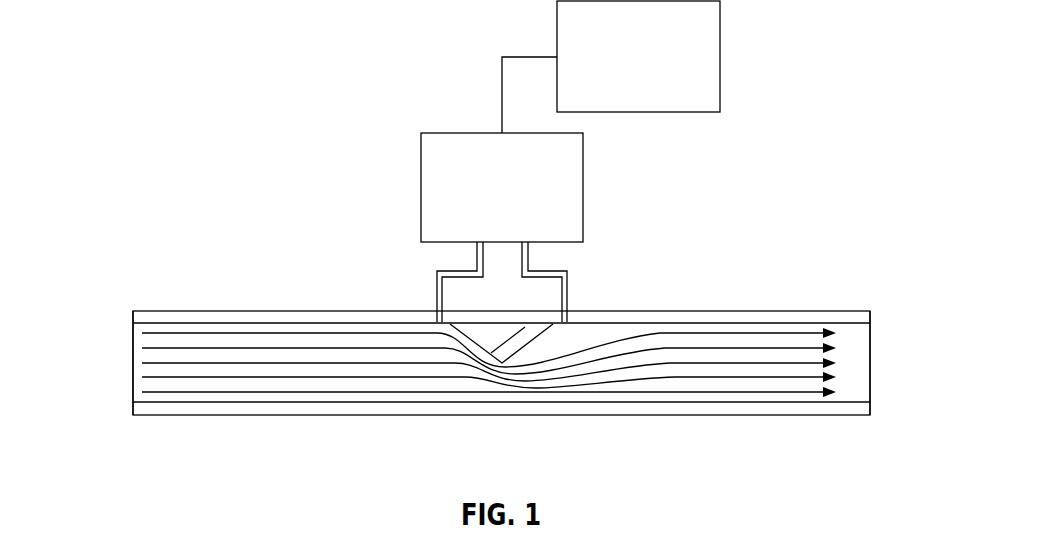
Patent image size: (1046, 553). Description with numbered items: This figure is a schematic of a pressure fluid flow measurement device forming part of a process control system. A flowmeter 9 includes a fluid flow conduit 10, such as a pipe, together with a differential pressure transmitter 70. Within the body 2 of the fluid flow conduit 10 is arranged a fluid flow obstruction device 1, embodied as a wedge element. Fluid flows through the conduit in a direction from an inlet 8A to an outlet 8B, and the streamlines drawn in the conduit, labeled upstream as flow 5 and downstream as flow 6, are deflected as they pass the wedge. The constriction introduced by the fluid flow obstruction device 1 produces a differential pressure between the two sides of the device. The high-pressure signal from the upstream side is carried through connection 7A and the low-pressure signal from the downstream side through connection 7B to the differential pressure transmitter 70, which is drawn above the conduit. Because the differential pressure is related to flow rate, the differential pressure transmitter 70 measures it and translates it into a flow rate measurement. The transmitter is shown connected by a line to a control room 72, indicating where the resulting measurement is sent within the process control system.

The fluid flow obstruction device 1 is at (527, 333).
The body 2 is at (698, 310).
The upstream fluid flow 5 is at (212, 362).
The downstream fluid flow 6 is at (770, 348).
The connection 7A is at (435, 276).
The connection 7B is at (567, 277).
The inlet 8A is at (127, 338).
The outlet 8B is at (876, 385).
The flowmeter 9 is at (473, 189).
The fluid flow conduit 10 is at (873, 302).
The differential pressure transmitter 70 is at (518, 232).
The control room 72 is at (655, 103).